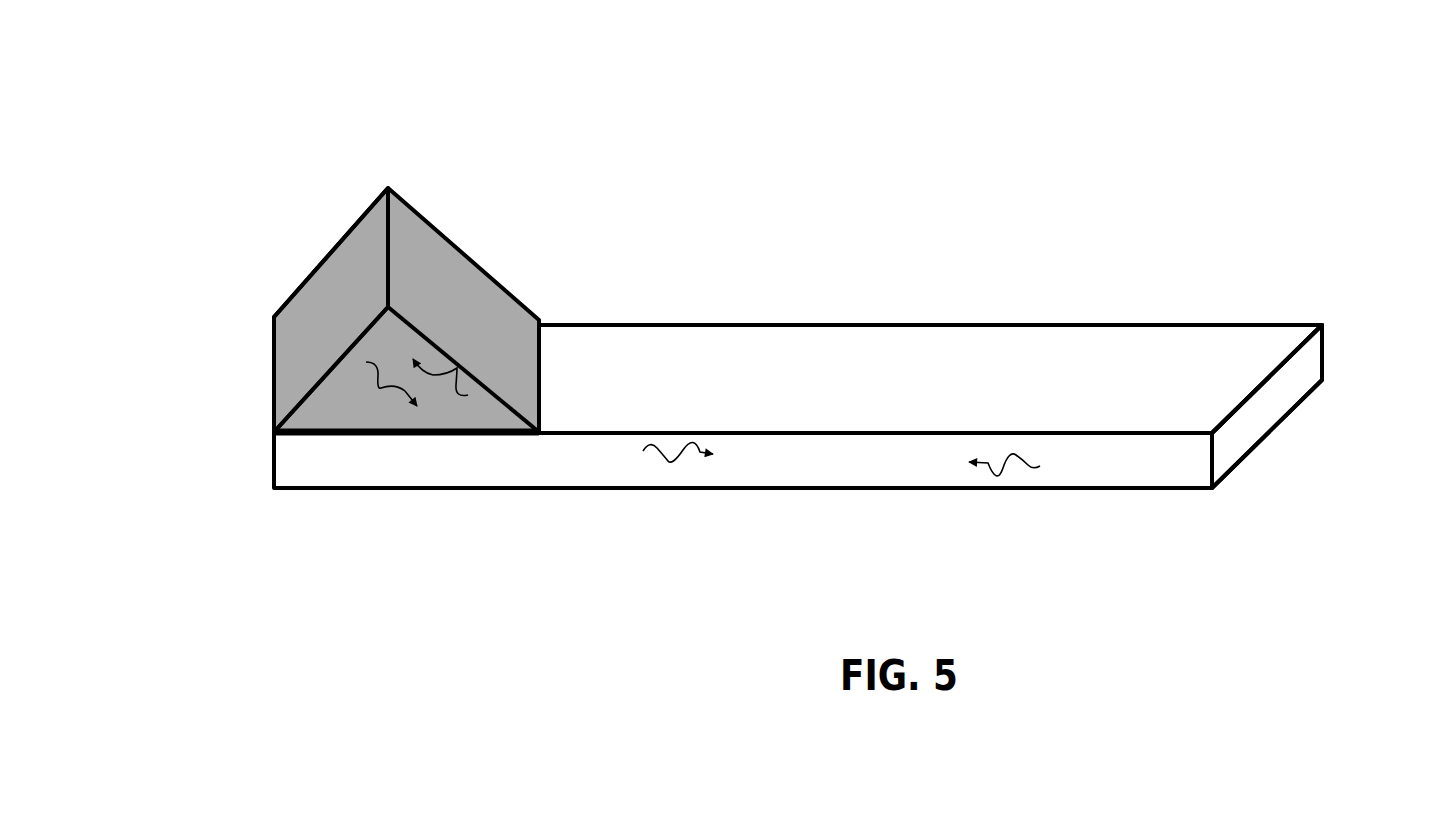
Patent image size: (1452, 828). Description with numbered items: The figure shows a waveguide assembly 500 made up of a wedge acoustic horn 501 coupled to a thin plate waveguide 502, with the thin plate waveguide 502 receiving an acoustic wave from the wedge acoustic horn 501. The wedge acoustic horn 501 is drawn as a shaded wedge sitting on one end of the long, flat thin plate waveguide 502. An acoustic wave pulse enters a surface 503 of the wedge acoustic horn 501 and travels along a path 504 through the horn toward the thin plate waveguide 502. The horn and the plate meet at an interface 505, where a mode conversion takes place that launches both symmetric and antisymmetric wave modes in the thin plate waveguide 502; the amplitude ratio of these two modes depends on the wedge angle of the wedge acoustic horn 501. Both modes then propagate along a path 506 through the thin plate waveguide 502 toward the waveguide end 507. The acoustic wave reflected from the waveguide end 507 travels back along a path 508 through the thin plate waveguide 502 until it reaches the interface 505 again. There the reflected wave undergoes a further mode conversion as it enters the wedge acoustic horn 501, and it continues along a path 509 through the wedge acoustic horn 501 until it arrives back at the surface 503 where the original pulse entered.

The waveguide assembly 500 is at (1338, 92).
The wedge acoustic horn 501 is at (375, 195).
The thin plate waveguide 502 is at (267, 458).
The surface 503 is at (322, 300).
The path 504 is at (373, 393).
The interface 505 is at (407, 437).
The path 506 is at (660, 465).
The waveguide end 507 is at (1273, 398).
The path 508 is at (1008, 473).
The path 509 is at (455, 368).